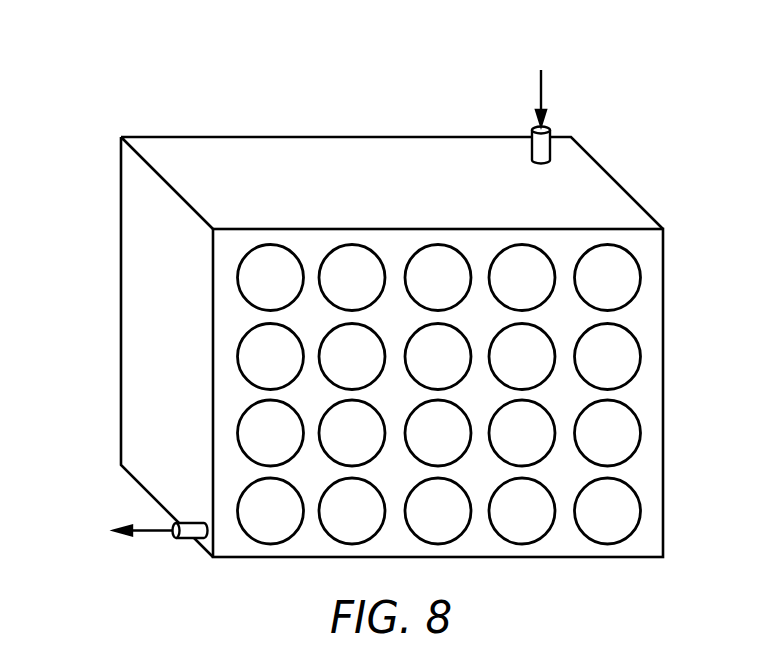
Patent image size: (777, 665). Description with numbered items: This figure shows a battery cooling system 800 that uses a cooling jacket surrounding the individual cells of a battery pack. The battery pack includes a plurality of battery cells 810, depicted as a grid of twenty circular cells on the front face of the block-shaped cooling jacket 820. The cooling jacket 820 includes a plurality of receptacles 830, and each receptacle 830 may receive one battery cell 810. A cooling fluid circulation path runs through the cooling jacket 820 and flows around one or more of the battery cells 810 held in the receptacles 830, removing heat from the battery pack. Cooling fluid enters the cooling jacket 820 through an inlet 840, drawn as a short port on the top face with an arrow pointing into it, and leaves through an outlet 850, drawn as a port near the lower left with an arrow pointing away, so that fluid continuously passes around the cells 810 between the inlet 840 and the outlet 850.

The battery cooling system 800 is at (56, 120).
The battery cell 810 is at (620, 415).
The cooling jacket 820 is at (393, 170).
The receptacle 830 is at (241, 338).
The inlet 840 is at (550, 148).
The outlet 850 is at (187, 540).